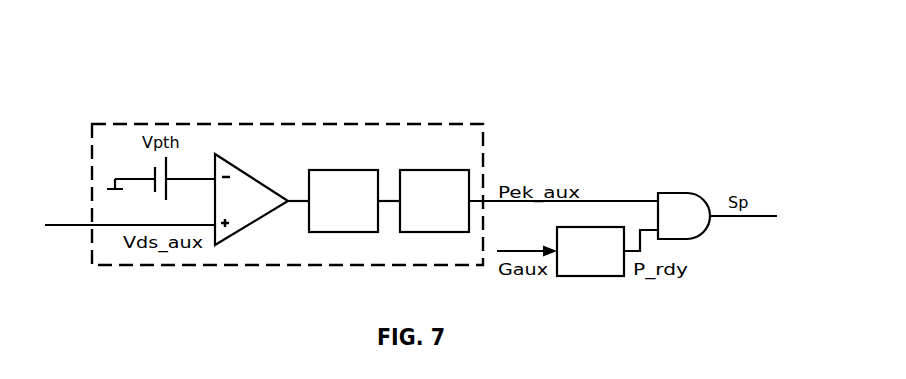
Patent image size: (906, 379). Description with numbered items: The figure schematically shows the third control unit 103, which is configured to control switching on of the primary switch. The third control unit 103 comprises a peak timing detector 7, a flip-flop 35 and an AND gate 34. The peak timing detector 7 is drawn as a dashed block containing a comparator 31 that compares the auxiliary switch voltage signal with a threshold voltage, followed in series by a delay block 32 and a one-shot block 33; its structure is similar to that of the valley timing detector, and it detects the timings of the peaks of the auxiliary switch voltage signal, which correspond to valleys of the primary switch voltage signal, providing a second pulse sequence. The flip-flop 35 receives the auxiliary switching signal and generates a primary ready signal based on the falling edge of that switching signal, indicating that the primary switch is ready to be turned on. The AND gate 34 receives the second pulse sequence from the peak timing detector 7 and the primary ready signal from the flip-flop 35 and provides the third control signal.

The third control unit 103 is at (615, 77).
The peak timing detector 7 is at (412, 124).
The comparator 31 is at (262, 197).
The delay block 32 is at (354, 190).
The one-shot block 33 is at (529, 190).
The AND gate 34 is at (717, 203).
The flip-flop 35 is at (577, 247).